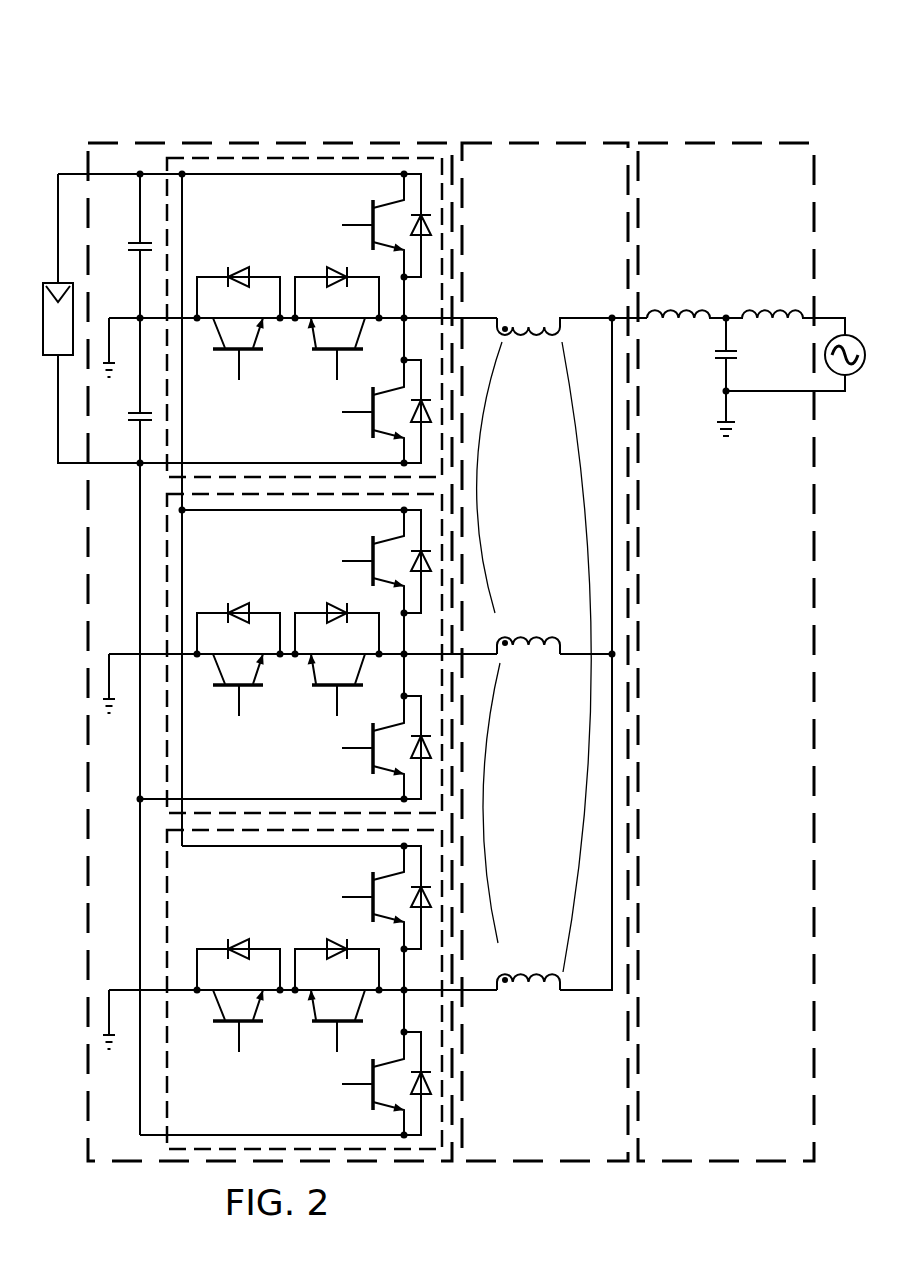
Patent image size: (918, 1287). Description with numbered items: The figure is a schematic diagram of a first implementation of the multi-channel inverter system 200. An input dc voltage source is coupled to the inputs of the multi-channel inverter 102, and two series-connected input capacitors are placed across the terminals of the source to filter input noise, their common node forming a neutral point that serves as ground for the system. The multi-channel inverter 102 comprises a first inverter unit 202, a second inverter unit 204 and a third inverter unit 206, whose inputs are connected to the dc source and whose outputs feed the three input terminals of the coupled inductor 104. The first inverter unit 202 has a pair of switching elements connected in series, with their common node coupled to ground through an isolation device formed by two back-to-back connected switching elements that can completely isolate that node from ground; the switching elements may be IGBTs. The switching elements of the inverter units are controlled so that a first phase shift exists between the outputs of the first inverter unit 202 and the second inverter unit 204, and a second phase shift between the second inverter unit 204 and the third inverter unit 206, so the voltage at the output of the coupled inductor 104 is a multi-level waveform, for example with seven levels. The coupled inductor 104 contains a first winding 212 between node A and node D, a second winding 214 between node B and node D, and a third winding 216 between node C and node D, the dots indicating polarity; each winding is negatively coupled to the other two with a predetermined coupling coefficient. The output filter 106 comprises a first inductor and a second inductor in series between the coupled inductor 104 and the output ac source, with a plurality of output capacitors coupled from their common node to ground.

The multi-channel inverter system 200 is at (310, 62).
The multi-channel inverter 102 is at (247, 142).
The coupled inductor 104 is at (567, 140).
The output filter 106 is at (753, 140).
The first inverter unit 202 is at (287, 233).
The second inverter unit 204 is at (291, 653).
The third inverter unit 206 is at (291, 989).
The first winding 212 is at (535, 340).
The second winding 214 is at (535, 637).
The third winding 216 is at (537, 972).